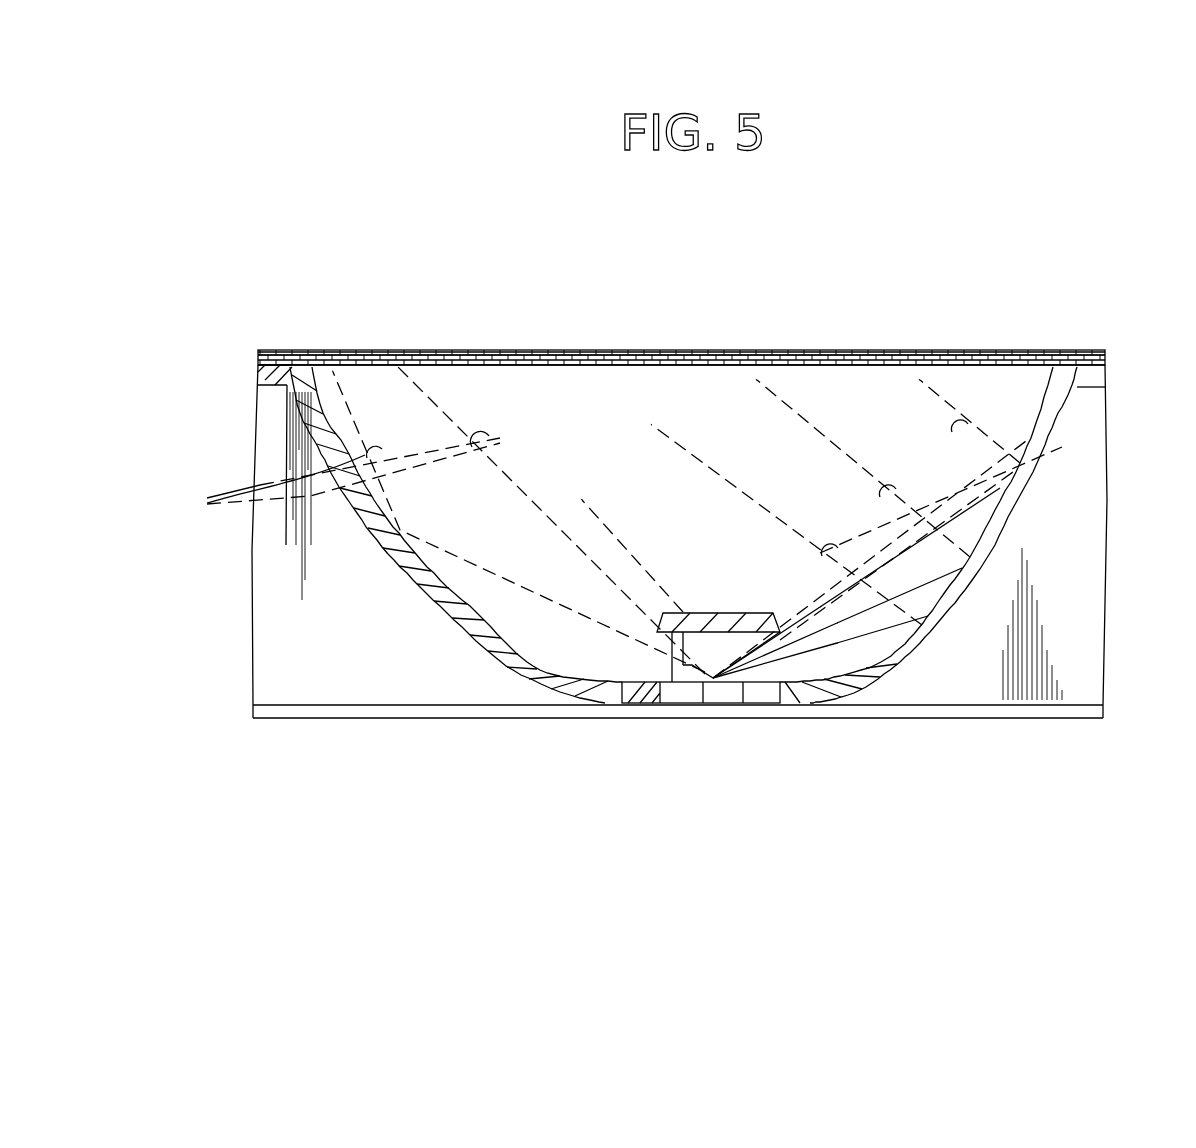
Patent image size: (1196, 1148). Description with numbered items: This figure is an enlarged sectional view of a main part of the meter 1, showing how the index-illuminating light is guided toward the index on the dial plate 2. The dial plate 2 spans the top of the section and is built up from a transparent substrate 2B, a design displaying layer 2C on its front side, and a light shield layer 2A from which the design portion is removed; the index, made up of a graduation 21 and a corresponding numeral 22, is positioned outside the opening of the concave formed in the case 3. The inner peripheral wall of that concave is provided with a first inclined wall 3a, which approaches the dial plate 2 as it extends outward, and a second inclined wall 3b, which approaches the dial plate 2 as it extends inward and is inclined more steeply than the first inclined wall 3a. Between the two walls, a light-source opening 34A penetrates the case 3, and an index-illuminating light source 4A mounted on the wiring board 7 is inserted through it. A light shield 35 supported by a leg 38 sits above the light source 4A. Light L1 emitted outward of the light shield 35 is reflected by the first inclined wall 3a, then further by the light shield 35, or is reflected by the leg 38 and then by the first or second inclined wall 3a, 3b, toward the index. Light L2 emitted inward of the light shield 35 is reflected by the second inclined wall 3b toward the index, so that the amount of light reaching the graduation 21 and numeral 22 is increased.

The meter 1 is at (1132, 362).
The dial plate 2 is at (657, 530).
The light shield layer 2A is at (258, 383).
The transparent substrate 2B is at (258, 361).
The design displaying layer 2C is at (258, 351).
The graduation 21 is at (398, 350).
The numeral 22 is at (780, 350).
The case 3 is at (711, 597).
The first inclined wall 3a is at (530, 628).
The second inclined wall 3b is at (947, 603).
The index-illuminating light source 4A is at (691, 737).
The wiring board 7 is at (883, 712).
The light-source opening 34A is at (687, 703).
The light shield 35 is at (690, 607).
The leg 38 is at (675, 653).
The light L1 is at (336, 478).
The light L2 is at (1013, 472).